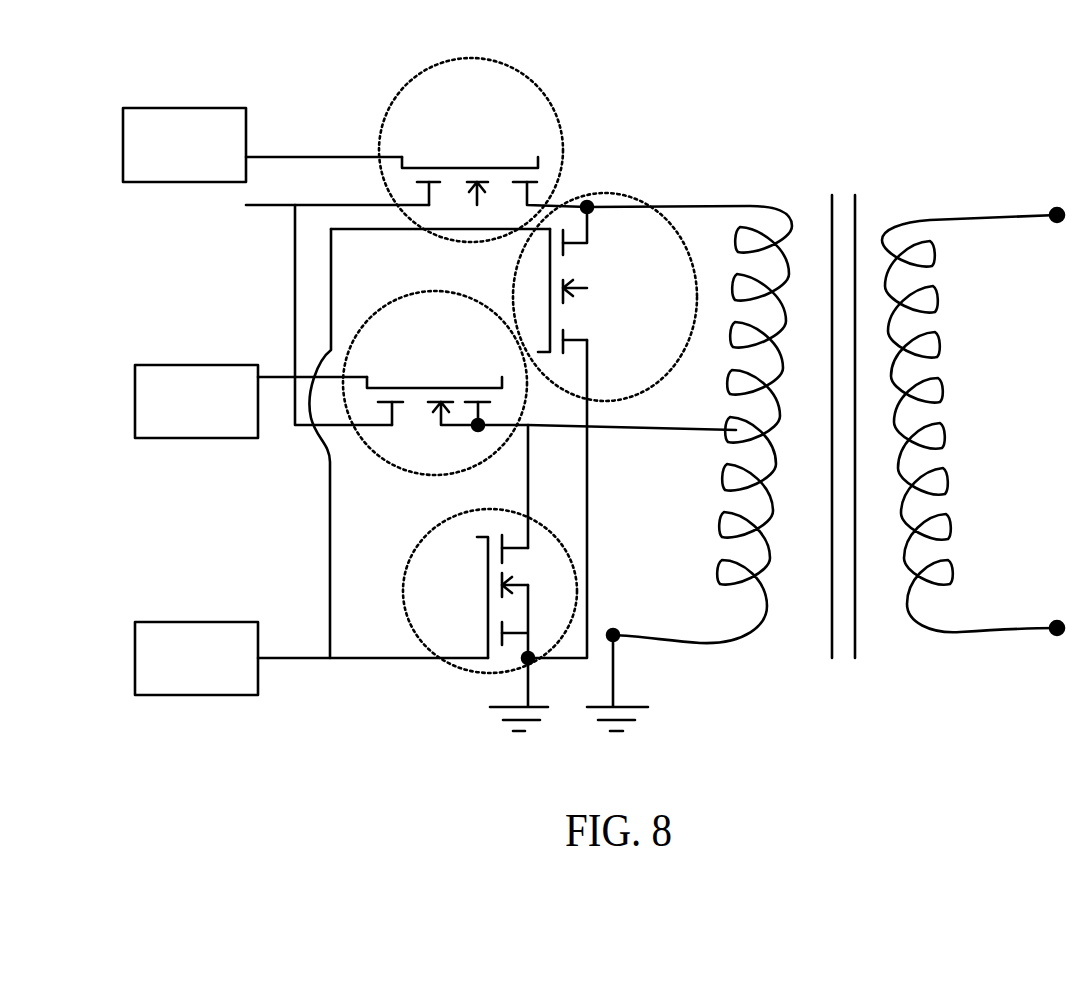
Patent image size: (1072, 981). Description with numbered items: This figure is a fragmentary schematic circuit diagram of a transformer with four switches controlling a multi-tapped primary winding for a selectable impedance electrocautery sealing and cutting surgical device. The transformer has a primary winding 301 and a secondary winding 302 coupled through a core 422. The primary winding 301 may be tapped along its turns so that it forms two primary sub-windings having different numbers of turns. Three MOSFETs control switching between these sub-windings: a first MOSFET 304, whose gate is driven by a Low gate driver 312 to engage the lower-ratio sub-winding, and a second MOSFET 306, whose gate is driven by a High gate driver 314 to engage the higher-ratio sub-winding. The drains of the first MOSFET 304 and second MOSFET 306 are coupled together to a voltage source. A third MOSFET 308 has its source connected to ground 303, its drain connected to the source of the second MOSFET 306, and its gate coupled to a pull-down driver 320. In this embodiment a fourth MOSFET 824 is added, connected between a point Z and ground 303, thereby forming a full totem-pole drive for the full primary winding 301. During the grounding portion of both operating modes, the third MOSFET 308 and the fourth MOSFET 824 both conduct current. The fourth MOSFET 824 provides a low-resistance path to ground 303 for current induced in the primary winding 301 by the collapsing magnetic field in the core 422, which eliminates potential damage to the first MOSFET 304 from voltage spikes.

The primary winding 301 is at (780, 207).
The secondary winding 302 is at (898, 207).
The ground 303 is at (495, 693).
The first MOSFET 304 is at (465, 58).
The second MOSFET 306 is at (487, 307).
The third MOSFET 308 is at (478, 512).
The Low gate driver 312 is at (184, 145).
The High gate driver 314 is at (196, 401).
The pull-down driver 320 is at (196, 658).
The core 422 is at (875, 627).
The fourth MOSFET 824 is at (688, 246).
The point Z is at (587, 207).